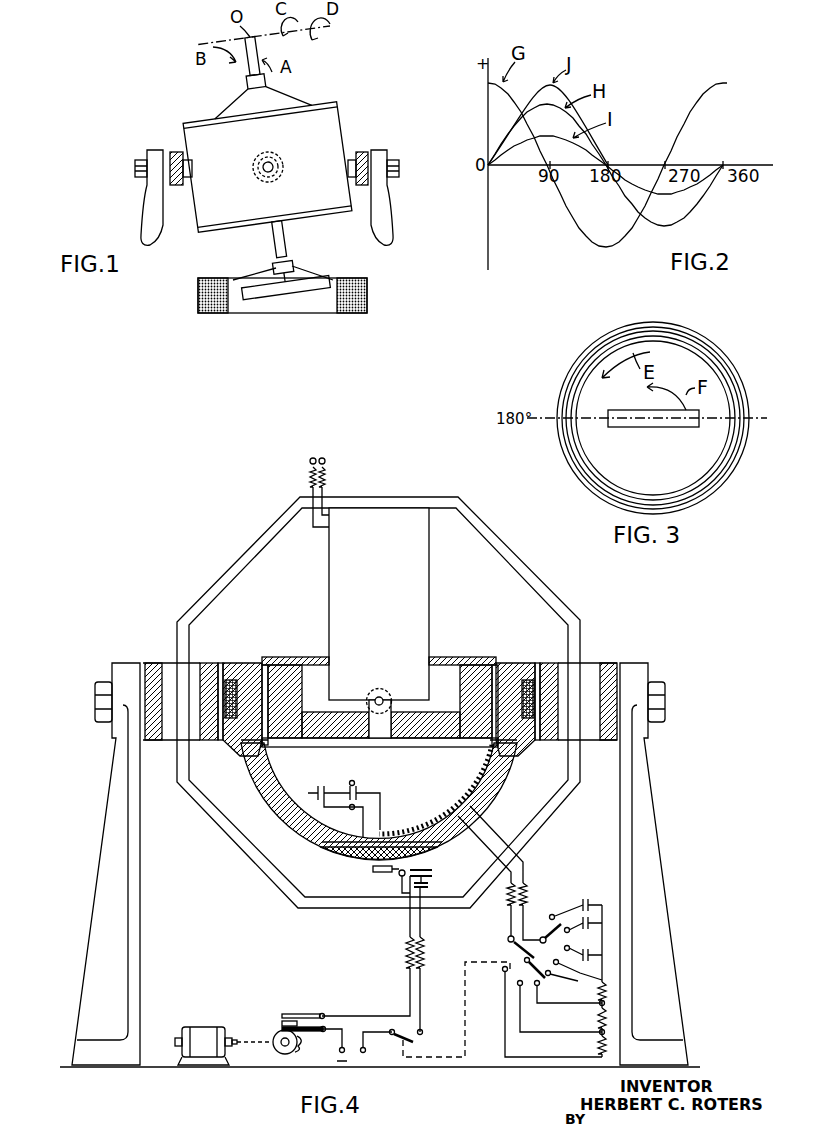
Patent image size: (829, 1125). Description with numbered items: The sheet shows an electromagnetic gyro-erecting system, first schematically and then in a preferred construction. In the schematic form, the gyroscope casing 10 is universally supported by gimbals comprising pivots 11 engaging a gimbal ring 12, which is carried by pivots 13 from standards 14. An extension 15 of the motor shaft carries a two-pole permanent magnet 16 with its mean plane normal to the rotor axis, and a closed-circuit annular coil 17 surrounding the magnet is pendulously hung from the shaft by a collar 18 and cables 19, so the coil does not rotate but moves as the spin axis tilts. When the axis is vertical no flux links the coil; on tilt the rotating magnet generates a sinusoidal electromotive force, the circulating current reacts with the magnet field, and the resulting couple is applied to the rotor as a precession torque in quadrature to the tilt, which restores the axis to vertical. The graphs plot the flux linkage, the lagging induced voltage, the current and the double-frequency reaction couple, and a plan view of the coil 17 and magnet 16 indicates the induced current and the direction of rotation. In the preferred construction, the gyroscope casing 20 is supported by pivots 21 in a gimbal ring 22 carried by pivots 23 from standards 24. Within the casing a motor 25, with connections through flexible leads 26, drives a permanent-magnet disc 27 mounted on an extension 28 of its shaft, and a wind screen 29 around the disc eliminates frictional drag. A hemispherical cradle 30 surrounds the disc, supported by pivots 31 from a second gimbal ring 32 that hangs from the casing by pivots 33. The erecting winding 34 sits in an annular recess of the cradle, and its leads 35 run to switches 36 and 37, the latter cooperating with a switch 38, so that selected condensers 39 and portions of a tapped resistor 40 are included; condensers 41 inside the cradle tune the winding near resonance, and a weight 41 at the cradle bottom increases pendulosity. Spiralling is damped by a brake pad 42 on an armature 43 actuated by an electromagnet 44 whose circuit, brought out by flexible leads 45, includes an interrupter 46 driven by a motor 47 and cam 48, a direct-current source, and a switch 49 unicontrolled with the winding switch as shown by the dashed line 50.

In FIG. 1, the casing 10 is at (203, 122).
In FIG. 1, the pivots 11 is at (272, 160).
In FIG. 1, the gimbal ring 12 is at (180, 150).
In FIG. 1, the pivots 13 is at (173, 158).
In FIG. 1, the standards 14 is at (148, 205).
In FIG. 1, the extension of the motor shaft 15 is at (287, 230).
In FIG. 1, the permanent magnet 16 is at (290, 312).
In FIG. 3, the permanent magnet 16 is at (657, 427).
In FIG. 1, the annular coil 17 is at (198, 296).
In FIG. 3, the annular coil 17 is at (568, 378).
In FIG. 1, the collar 18 is at (293, 266).
In FIG. 1, the cables 19 is at (240, 276).
In FIG. 4, the gyroscope casing 20 is at (512, 556).
In FIG. 4, the pivots 21 is at (384, 698).
In FIG. 4, the gimbal ring 22 is at (152, 663).
In FIG. 4, the pivots 23 is at (150, 702).
In FIG. 4, the standards 24 is at (97, 890).
In FIG. 4, the motor 25 is at (329, 590).
In FIG. 4, the flexible leads 26 is at (327, 468).
In FIG. 4, the disc 27 is at (425, 738).
In FIG. 4, the extension of the motor shaft 28 is at (382, 738).
In FIG. 4, the wind screen 29 is at (443, 656).
In FIG. 4, the hemispherical cradle 30 is at (247, 762).
In FIG. 4, the pivots 31 is at (213, 700).
In FIG. 4, the second gimbal ring 32 is at (208, 668).
In FIG. 4, the pivots 33 is at (378, 690).
In FIG. 4, the winding 34 is at (246, 672).
In FIG. 4, the leads 35 is at (526, 892).
In FIG. 4, the switch 36 is at (555, 930).
In FIG. 4, the switch 37 is at (509, 944).
In FIG. 4, the switch 38 is at (540, 984).
In FIG. 4, the condensers 39 is at (592, 947).
In FIG. 4, the tapped resistor 40 is at (598, 1020).
In FIG. 4, the condensers 41 is at (318, 788).
In FIG. 4, the brake pad 42 is at (375, 872).
In FIG. 4, the armature 43 is at (428, 870).
In FIG. 4, the electromagnet 44 is at (430, 885).
In FIG. 4, the flexible leads 45 is at (406, 943).
In FIG. 4, the interrupter 46 is at (282, 1023).
In FIG. 4, the motor 47 is at (205, 1033).
In FIG. 4, the cam 48 is at (296, 1052).
In FIG. 4, the switch 49 is at (394, 1038).
In FIG. 4, the dashed line 50 is at (465, 990).